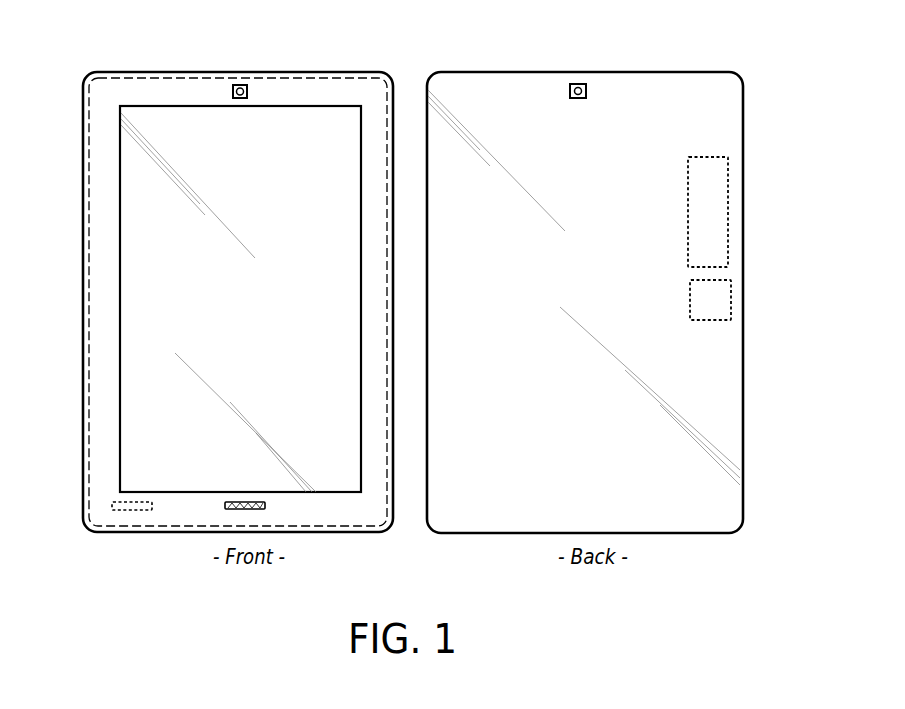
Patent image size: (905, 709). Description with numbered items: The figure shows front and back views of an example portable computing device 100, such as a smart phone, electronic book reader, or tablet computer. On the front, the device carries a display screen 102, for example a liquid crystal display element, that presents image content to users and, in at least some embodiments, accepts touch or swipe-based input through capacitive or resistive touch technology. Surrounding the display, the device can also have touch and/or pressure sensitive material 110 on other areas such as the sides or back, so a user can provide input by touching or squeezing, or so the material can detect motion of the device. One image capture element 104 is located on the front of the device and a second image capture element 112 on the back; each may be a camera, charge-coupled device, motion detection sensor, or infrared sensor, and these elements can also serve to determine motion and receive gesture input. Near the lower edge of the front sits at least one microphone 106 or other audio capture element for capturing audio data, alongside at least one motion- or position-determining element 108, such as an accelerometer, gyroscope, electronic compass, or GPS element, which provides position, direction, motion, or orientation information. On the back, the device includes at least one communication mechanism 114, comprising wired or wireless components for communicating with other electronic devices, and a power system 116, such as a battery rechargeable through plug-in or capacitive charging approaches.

The portable computing device 100 is at (786, 82).
The display screen 102 is at (120, 217).
The image capture element 104 is at (240, 84).
The microphone 106 is at (252, 509).
The motion- or position-determining element 108 is at (128, 511).
The touch and/or pressure sensitive material 110 is at (83, 360).
The image capture element 112 is at (578, 83).
The communication mechanism 114 is at (727, 228).
The power system 116 is at (731, 301).